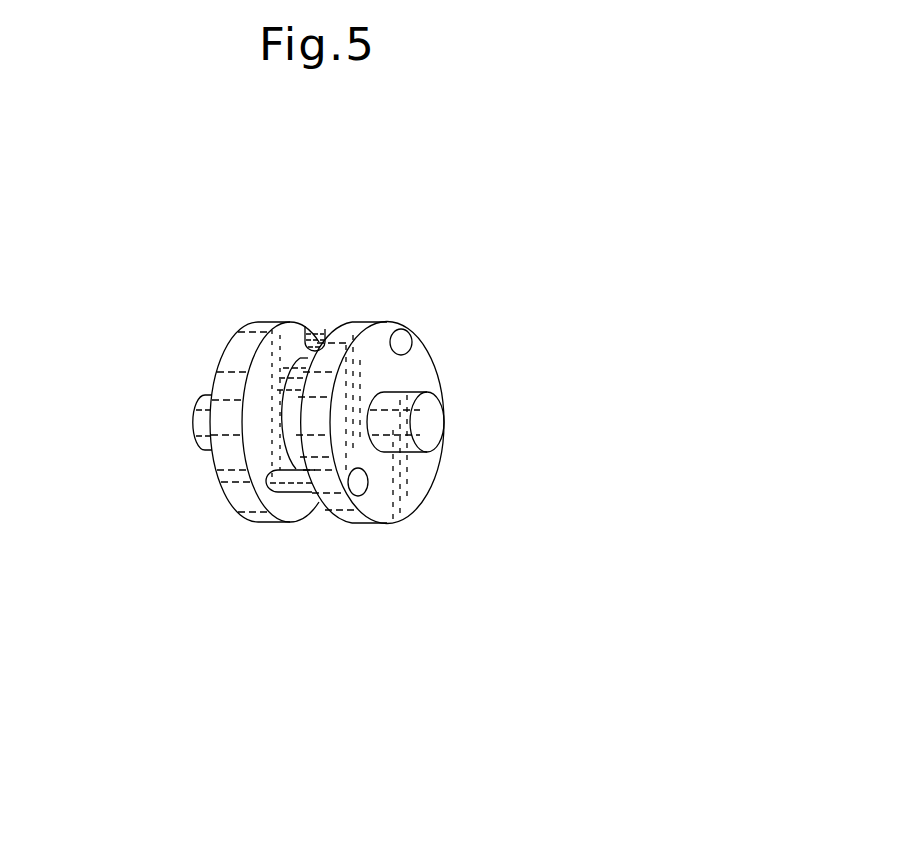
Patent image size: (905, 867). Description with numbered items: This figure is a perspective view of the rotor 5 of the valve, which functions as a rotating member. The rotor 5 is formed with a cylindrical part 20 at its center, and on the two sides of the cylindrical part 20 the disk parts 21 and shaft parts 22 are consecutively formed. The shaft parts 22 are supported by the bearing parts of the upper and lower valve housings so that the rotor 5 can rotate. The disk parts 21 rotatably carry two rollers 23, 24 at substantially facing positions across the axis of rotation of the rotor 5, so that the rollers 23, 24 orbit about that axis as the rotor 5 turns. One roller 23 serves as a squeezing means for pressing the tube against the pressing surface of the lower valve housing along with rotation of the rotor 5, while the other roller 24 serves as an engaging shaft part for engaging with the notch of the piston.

The rotor 5 is at (375, 600).
The cylindrical part 20 is at (229, 315).
The disk part 21 is at (506, 466).
The shaft part 22 is at (423, 413).
The roller 23 is at (182, 619).
The roller 24 is at (448, 216).